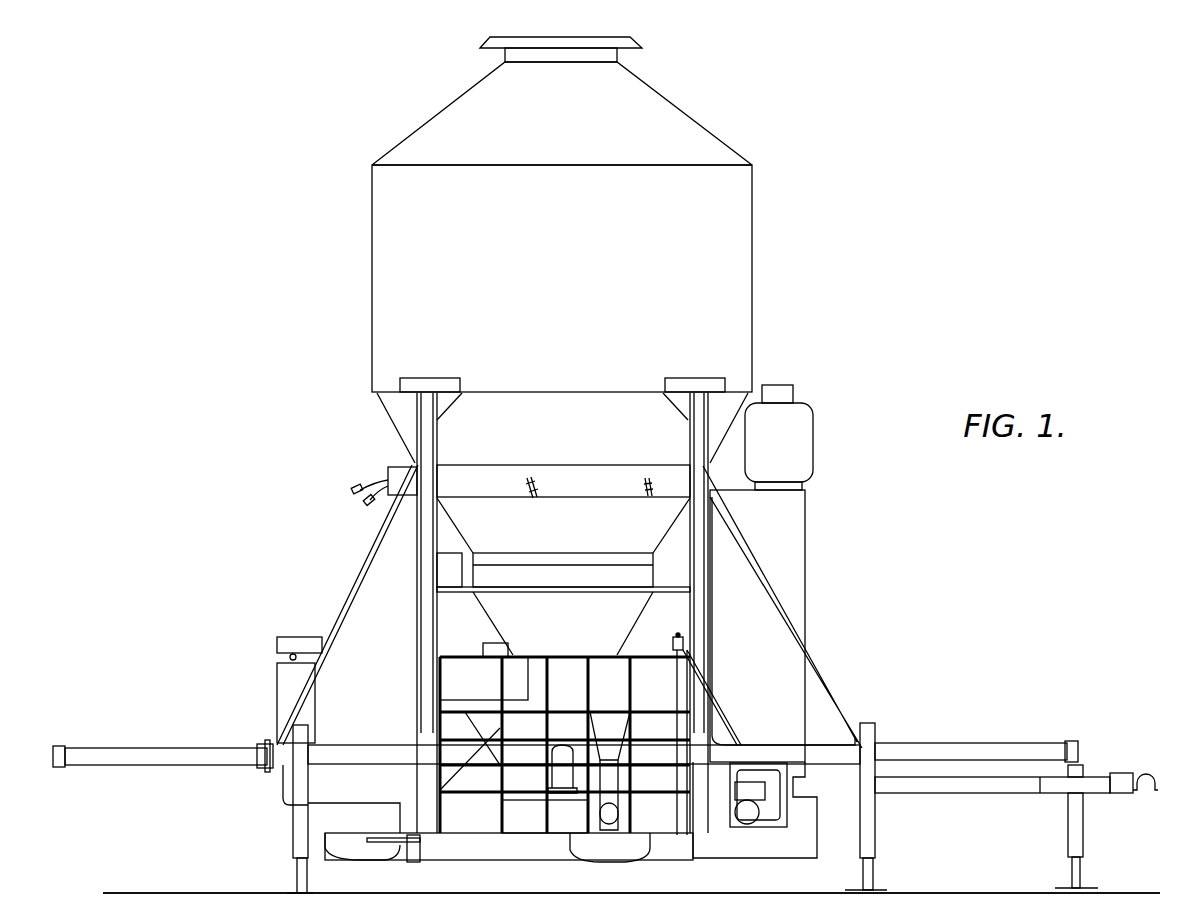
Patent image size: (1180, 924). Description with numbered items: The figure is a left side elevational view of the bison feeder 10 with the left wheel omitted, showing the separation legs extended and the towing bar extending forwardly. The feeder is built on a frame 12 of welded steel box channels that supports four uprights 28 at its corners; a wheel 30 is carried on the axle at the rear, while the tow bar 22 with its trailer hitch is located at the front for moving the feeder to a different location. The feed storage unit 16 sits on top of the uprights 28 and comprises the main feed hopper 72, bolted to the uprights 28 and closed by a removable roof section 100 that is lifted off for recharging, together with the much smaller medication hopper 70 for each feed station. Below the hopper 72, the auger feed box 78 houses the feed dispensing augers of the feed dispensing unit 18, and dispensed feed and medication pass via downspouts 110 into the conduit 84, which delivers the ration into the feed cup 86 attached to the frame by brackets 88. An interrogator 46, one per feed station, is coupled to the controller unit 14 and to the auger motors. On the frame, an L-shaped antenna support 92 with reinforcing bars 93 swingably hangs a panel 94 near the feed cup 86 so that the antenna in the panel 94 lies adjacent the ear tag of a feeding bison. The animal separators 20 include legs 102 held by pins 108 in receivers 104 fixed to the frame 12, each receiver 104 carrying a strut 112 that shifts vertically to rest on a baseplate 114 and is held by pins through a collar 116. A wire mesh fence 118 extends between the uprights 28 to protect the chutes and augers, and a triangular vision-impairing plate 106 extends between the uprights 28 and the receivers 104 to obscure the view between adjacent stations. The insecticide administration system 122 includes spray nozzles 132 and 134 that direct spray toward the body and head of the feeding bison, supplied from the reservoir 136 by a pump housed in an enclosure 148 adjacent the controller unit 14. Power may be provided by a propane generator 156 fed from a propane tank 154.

The bison feeder 10 is at (880, 313).
The frame 12 is at (820, 840).
The controller unit 14 is at (808, 530).
The feed storage unit 16 is at (372, 262).
The feed dispensing unit 18 is at (655, 635).
The animal separators 20 is at (882, 735).
The tow bar 22 is at (1095, 775).
The uprights 28 is at (430, 430).
The wheel 30 is at (455, 893).
The interrogator 46 is at (512, 668).
The medication hopper 70 is at (490, 568).
The main feed hopper 72 is at (745, 232).
The auger feed box 78 is at (490, 650).
The conduit 84 is at (440, 780).
The feed cup 86 is at (337, 848).
The brackets 88 is at (385, 848).
The antenna support 92 is at (315, 643).
The reinforcing bars 93 is at (725, 715).
The panel 94 is at (283, 687).
The roof section 100 is at (485, 40).
The legs 102 is at (117, 753).
The receivers 104 is at (322, 755).
The vision-impairing plate 106 is at (388, 580).
The pins 108 is at (265, 748).
The downspouts 110 is at (611, 712).
The strut 112 is at (298, 820).
The baseplate 114 is at (288, 893).
The collar 116 is at (280, 790).
The wire mesh fence 118 is at (665, 700).
The insecticide administration system 122 is at (383, 487).
The spray nozzle 132 is at (645, 480).
The spray nozzle 134 is at (527, 482).
The reservoir 136 is at (527, 818).
The enclosure 148 is at (785, 792).
The propane tank 154 is at (810, 430).
The propane generator 156 is at (747, 822).